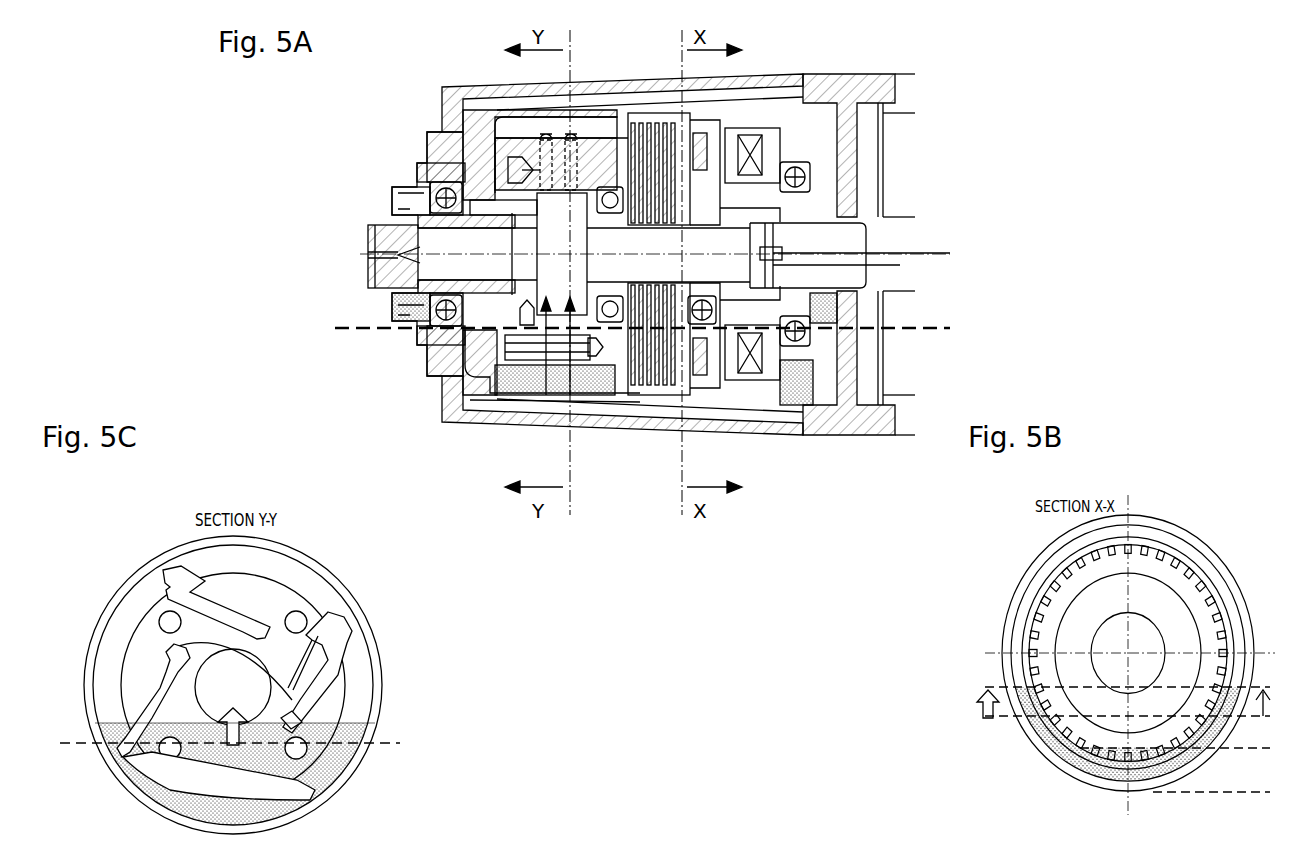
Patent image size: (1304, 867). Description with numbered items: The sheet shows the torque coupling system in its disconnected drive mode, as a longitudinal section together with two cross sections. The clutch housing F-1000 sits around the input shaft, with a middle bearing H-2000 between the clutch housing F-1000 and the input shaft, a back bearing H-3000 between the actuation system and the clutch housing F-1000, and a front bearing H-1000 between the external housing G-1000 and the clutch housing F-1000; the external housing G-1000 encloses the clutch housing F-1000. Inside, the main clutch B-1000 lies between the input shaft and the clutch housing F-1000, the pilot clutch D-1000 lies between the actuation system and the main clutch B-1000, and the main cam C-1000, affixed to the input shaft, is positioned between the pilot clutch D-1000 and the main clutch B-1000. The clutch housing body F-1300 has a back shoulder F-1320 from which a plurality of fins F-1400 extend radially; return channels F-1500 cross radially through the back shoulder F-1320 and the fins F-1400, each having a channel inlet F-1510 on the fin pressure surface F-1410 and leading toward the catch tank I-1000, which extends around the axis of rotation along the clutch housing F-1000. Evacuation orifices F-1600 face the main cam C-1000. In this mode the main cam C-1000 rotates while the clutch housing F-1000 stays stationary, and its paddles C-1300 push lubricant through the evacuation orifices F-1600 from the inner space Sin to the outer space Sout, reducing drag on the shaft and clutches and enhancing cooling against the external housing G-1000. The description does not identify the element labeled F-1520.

In FIG. 5A, the fins F-1400 is at (520, 165).
In FIG. 5C, the fins F-1400 is at (215, 562).
In FIG. 5A, the return channels F-1500 is at (530, 190).
In FIG. 5C, the return channels F-1500 is at (310, 680).
In FIG. 5A, the back shoulder F-1320 is at (497, 193).
In FIG. 5A, the catch tank I-1000 is at (522, 300).
In FIG. 5C, the catch tank I-1000 is at (268, 708).
In FIG. 5A, the back bearing H-3000 is at (418, 278).
In FIG. 5A, the clutch housing F-1000 is at (540, 370).
In FIG. 5A, the external housing G-1000 is at (465, 402).
In FIG. 5C, the external housing G-1000 is at (380, 683).
In FIG. 5B, the external housing G-1000 is at (1005, 668).
In FIG. 5A, the main cam C-1000 is at (700, 150).
In FIG. 5A, the pilot clutch D-1000 is at (752, 144).
In FIG. 5A, the front bearing H-1000 is at (807, 174).
In FIG. 5A, the middle bearing H-2000 is at (880, 265).
In FIG. 5A, the outer space Sout is at (725, 385).
In FIG. 5B, the outer space Sout is at (1213, 573).
In FIG. 5A, the inner space Sin is at (712, 392).
In FIG. 5B, the inner space Sin is at (1207, 630).
In FIG. 5A, the main clutch B-1000 is at (660, 385).
In FIG. 5C, the channel inlet F-1510 is at (320, 618).
In FIG. 5C, the fin pressure surface F-1410 is at (332, 626).
In FIG. 5C, the vane tab F-1520 is at (287, 717).
In FIG. 5B, the paddles C-1300 is at (1043, 652).
In FIG. 5B, the evacuation orifices F-1600 is at (1095, 633).
In FIG. 5B, the clutch housing body F-1300 is at (1023, 647).